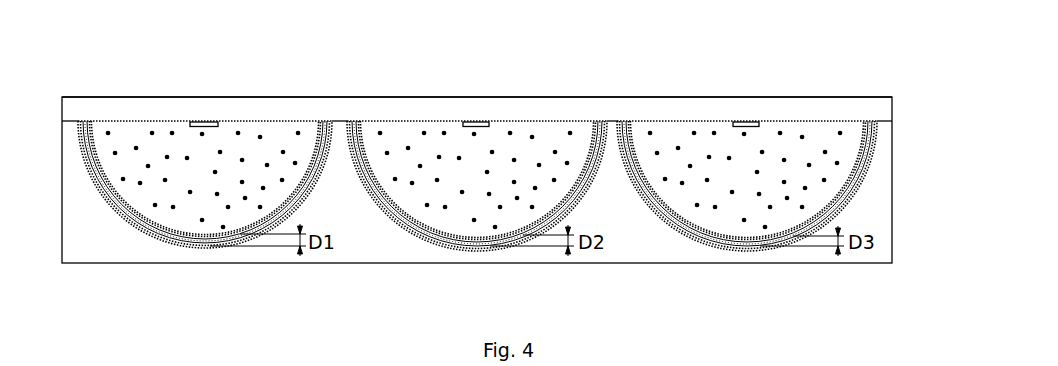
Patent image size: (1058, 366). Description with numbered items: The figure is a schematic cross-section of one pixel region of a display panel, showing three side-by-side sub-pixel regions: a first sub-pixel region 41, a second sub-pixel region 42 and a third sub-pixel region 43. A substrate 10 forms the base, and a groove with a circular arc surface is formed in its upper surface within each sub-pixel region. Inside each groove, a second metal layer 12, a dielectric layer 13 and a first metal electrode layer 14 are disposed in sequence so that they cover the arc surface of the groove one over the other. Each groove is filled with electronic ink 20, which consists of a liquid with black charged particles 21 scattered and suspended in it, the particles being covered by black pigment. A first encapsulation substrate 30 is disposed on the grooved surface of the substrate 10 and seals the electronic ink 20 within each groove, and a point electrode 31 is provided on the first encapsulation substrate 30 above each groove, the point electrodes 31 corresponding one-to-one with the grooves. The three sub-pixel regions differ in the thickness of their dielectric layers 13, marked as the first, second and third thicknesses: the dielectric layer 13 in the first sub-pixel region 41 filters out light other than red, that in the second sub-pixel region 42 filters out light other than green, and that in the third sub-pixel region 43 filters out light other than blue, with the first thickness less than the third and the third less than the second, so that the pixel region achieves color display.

The substrate 10 is at (868, 217).
The second metal layer 12 is at (187, 247).
The dielectric layer 13 is at (208, 242).
The first metal electrode layer 14 is at (237, 233).
The electronic ink 20 is at (829, 178).
The black charged particles 21 is at (829, 149).
The first encapsulation substrate 30 is at (883, 110).
The point electrodes 31 is at (475, 125).
The first sub-pixel region 41 is at (214, 92).
The second sub-pixel region 42 is at (442, 92).
The third sub-pixel region 43 is at (737, 92).